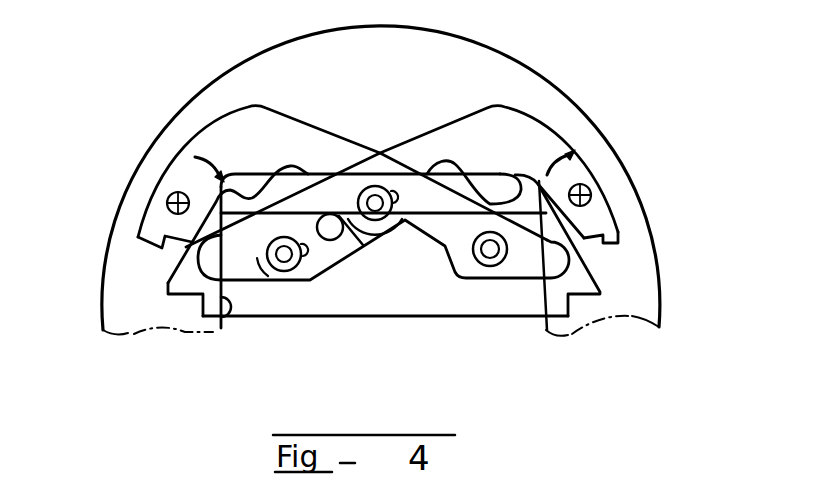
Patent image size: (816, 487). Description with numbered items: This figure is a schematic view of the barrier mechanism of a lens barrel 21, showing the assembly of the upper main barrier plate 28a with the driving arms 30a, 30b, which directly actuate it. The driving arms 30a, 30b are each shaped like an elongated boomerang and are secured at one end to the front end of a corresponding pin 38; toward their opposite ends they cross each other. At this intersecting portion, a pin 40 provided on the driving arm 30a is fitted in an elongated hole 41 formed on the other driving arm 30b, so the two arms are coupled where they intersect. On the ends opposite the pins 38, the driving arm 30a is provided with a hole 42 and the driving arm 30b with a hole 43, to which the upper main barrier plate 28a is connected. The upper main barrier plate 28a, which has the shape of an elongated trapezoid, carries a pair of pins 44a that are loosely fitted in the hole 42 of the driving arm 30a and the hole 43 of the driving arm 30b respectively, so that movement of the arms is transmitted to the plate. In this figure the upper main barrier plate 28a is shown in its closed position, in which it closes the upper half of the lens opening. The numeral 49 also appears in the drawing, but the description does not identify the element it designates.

The lens barrel 21 is at (527, 70).
The upper main barrier plate 28a is at (383, 293).
The driving arm 30a is at (213, 130).
The driving arm 30b is at (547, 140).
The pin 38 is at (168, 199).
The pin 40 is at (377, 197).
The elongated hole 41 is at (330, 220).
The hole 42 is at (472, 255).
The hole 43 is at (306, 257).
The pin 44a is at (285, 262).
The side wall edge 49 is at (221, 327).